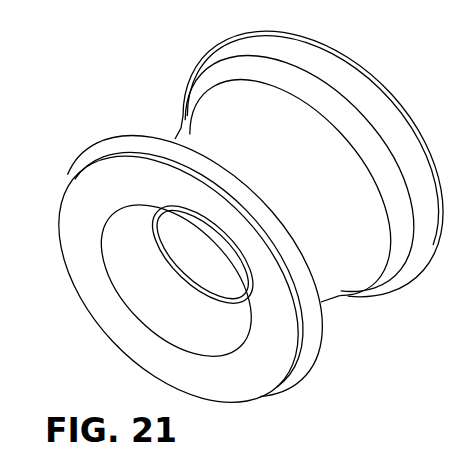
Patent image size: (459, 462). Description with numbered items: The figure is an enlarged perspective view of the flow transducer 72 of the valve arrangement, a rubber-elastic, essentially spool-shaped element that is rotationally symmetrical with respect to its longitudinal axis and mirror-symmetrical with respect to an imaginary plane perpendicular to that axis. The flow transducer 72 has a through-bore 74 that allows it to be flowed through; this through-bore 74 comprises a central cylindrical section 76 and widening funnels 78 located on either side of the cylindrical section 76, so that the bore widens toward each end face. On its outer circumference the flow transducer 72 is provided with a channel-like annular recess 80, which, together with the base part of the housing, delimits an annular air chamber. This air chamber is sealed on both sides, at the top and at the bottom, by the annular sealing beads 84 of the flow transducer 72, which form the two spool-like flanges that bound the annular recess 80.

The flow transducer 72 is at (146, 111).
The through-bore 74 is at (133, 293).
The central cylindrical section 76 is at (216, 271).
The widening funnels 78 is at (198, 336).
The channel-like annular recess 80 is at (328, 206).
The annular sealing beads 84 is at (360, 88).